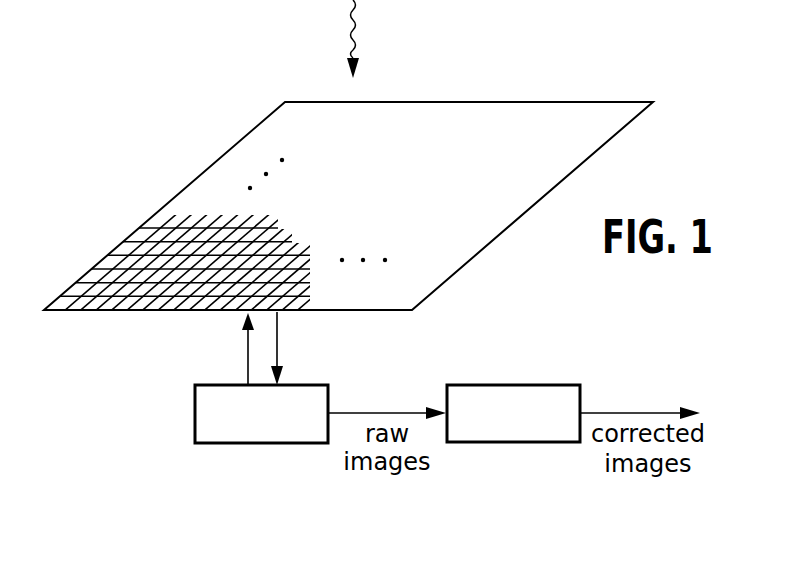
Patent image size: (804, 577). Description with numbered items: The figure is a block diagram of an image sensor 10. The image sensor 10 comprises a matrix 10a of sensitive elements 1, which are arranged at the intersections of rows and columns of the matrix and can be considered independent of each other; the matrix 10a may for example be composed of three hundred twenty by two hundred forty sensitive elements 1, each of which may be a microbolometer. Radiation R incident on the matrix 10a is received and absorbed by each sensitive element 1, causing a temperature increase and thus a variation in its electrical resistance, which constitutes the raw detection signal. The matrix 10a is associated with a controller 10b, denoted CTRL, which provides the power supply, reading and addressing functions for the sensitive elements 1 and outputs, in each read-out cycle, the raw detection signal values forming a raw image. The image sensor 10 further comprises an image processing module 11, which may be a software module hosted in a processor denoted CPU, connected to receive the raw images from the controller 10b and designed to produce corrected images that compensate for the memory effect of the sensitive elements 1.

The sensitive element 1 is at (108, 277).
The image sensor 10 is at (102, 348).
The matrix of sensitive elements 10a is at (147, 311).
The controller 10b is at (195, 422).
The image processing module 11 is at (547, 384).
The radiation R is at (365, 39).